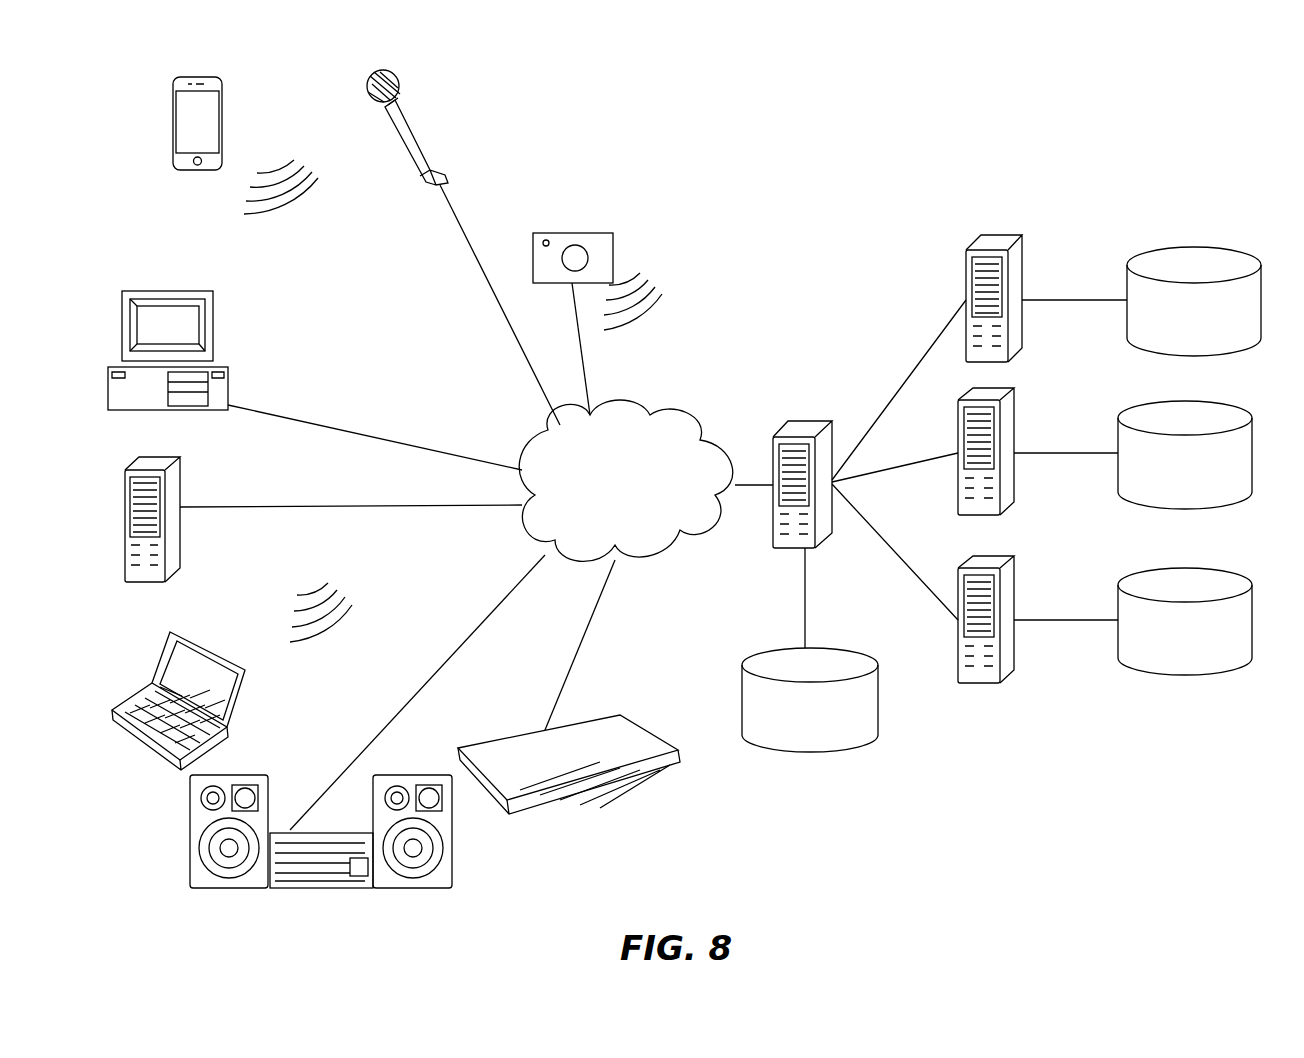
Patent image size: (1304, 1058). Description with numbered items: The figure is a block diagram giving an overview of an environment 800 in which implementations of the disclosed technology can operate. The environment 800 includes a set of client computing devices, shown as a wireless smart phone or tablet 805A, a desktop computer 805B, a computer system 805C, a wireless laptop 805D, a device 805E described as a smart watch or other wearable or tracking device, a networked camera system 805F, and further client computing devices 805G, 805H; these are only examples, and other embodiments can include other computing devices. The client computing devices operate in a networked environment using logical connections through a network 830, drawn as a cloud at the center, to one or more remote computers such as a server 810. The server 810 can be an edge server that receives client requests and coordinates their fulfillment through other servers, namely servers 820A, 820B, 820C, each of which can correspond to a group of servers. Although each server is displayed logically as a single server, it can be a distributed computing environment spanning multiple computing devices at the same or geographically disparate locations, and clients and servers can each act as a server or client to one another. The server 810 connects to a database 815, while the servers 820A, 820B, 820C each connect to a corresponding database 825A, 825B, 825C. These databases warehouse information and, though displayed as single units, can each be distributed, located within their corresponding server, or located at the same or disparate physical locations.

The environment 800 is at (818, 214).
The wireless smart phone or tablet 805A is at (210, 77).
The desktop computer 805B is at (203, 292).
The computer system 805C is at (168, 456).
The wireless laptop 805D is at (243, 700).
The smart watch 805E is at (452, 886).
The networked camera system 805F is at (640, 792).
The client computing device 805G is at (430, 125).
The client computing device 805H is at (607, 234).
The server 810 is at (812, 420).
The database 815 is at (872, 656).
The server 820A is at (1010, 250).
The server 820B is at (1002, 400).
The server 820C is at (1002, 568).
The database 825A is at (1190, 248).
The database 825B is at (1180, 400).
The database 825C is at (1180, 566).
The network 830 is at (678, 410).